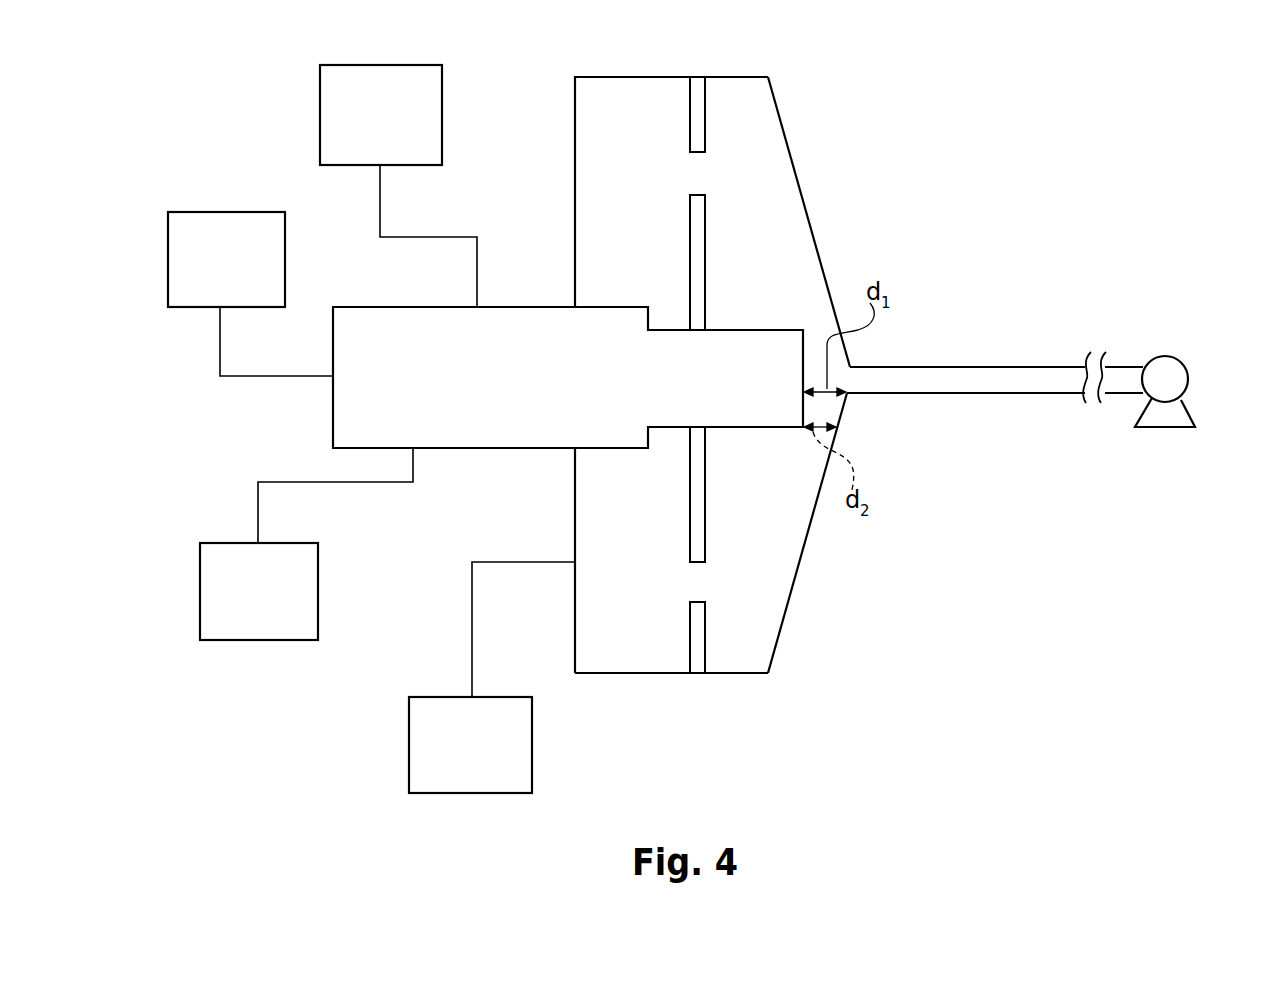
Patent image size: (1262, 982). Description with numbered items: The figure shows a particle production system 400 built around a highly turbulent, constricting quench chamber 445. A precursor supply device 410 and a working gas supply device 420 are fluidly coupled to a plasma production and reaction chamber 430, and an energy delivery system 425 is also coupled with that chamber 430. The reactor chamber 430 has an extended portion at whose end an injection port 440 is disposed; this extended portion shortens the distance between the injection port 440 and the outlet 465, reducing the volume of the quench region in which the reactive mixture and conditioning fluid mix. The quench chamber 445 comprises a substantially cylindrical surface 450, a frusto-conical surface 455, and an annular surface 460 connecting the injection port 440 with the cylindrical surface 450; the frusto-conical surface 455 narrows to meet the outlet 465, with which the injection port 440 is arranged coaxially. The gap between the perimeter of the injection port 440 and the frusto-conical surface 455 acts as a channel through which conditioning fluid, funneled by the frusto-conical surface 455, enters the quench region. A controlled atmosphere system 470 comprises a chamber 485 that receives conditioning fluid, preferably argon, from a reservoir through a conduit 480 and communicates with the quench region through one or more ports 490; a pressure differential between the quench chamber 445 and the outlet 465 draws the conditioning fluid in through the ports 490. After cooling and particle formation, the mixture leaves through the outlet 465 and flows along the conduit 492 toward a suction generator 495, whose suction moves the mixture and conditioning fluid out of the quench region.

The particle production system 400 is at (1006, 115).
The precursor supply device 410 is at (360, 130).
The working gas supply device 420 is at (205, 275).
The energy delivery system 425 is at (238, 606).
The plasma production and reaction chamber 430 is at (471, 393).
The injection port 440 is at (804, 330).
The quench chamber 445 is at (748, 545).
The cylindrical surface 450 is at (742, 678).
The frusto-conical surface 455 is at (779, 102).
The annular surface 460 is at (690, 531).
The outlet 465 is at (851, 366).
The controlled atmosphere system 470 is at (449, 760).
The conduit 480 is at (472, 637).
The chamber 485 is at (612, 524).
The ports 490 is at (697, 168).
The conduit 492 is at (983, 396).
The suction generator 495 is at (1188, 365).